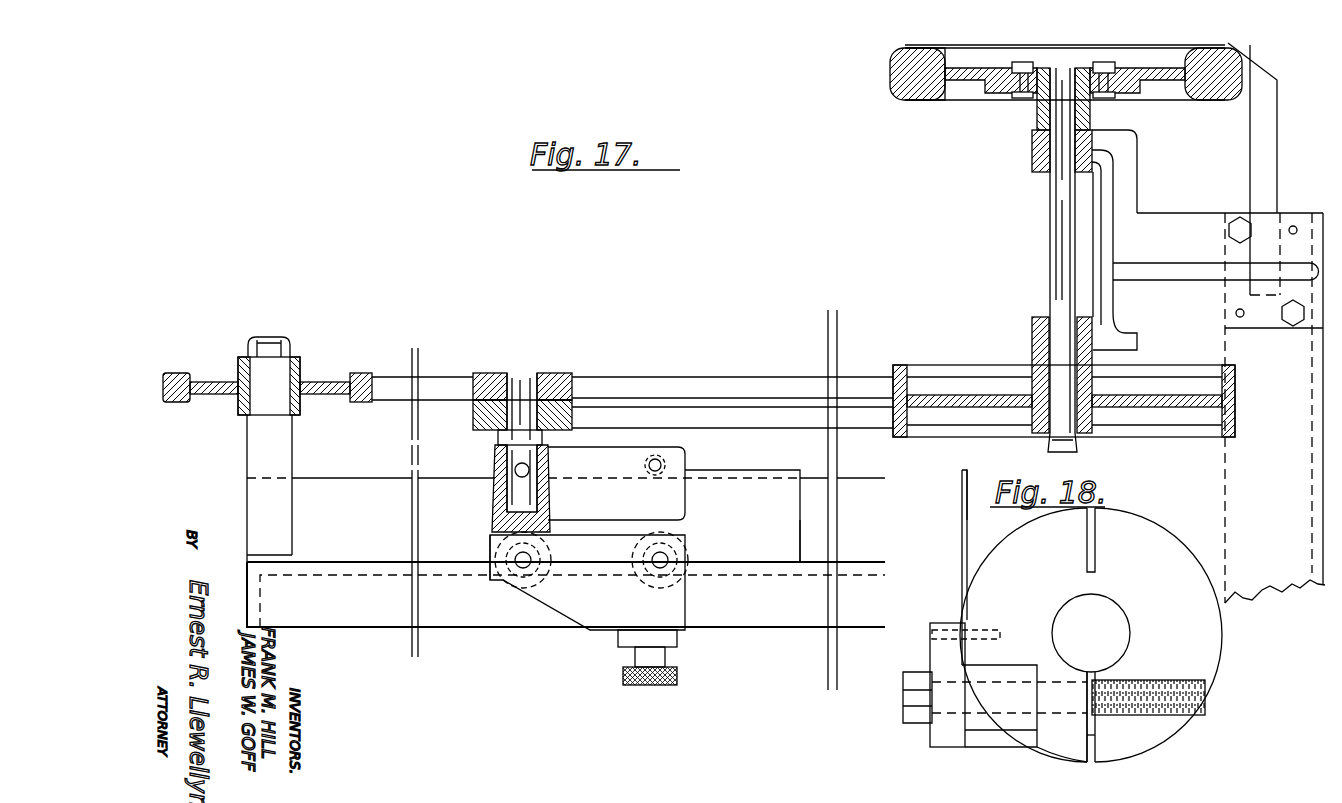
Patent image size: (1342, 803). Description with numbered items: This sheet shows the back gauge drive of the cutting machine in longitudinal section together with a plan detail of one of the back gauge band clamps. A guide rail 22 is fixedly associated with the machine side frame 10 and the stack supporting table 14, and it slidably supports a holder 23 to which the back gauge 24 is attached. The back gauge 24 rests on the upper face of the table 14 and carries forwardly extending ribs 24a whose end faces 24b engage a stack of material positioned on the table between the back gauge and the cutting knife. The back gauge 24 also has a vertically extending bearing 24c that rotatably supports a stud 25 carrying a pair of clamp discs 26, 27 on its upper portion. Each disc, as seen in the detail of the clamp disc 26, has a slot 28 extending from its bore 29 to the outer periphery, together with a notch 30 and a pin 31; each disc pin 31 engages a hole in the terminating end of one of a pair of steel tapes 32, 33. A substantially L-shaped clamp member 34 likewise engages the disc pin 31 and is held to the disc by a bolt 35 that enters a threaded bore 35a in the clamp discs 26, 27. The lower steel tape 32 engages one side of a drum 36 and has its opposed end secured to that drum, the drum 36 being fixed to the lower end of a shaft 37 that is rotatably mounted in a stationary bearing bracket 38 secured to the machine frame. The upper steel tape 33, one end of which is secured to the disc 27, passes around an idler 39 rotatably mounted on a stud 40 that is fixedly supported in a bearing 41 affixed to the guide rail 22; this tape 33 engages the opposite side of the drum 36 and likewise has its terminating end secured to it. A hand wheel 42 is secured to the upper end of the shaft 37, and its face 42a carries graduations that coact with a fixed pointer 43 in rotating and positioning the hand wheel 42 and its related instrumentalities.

In FIG. 17, the side frame 10 is at (1300, 578).
In FIG. 17, the table 14 is at (783, 620).
In FIG. 17, the guide rail 22 is at (337, 478).
In FIG. 17, the holder 23 is at (550, 610).
In FIG. 17, the back gauge 24 is at (618, 452).
In FIG. 17, the forwardly extending ribs 24a is at (775, 470).
In FIG. 17, the end faces 24b is at (802, 522).
In FIG. 17, the vertically extending bearing 24c is at (495, 500).
In FIG. 17, the stud 25 is at (493, 452).
In FIG. 17, the clamp disc 26 is at (472, 417).
In FIG. 18, the clamp disc 26 is at (1218, 645).
In FIG. 17, the clamp disc 27 is at (558, 371).
In FIG. 18, the slot 28 is at (1092, 740).
In FIG. 18, the bore 29 is at (1112, 612).
In FIG. 18, the notch 30 is at (985, 722).
In FIG. 18, the pin 31 is at (985, 628).
In FIG. 17, the lower steel tape 32 is at (732, 433).
In FIG. 18, the lower steel tape 32 is at (962, 530).
In FIG. 17, the upper steel tape 33 is at (717, 376).
In FIG. 18, the upper steel tape 33 is at (962, 482).
In FIG. 18, the L-shaped clamp member 34 is at (935, 623).
In FIG. 18, the bolt 35 is at (915, 722).
In FIG. 18, the threaded bore 35a is at (1155, 680).
In FIG. 17, the drum 36 is at (1160, 430).
In FIG. 17, the shaft 37 is at (1057, 272).
In FIG. 17, the bearing bracket 38 is at (1112, 273).
In FIG. 17, the idler 39 is at (212, 402).
In FIG. 17, the stud 40 is at (268, 372).
In FIG. 17, the bearing 41 is at (258, 440).
In FIG. 17, the hand wheel 42 is at (957, 100).
In FIG. 17, the face 42a is at (908, 57).
In FIG. 17, the fixed pointer 43 is at (1272, 148).